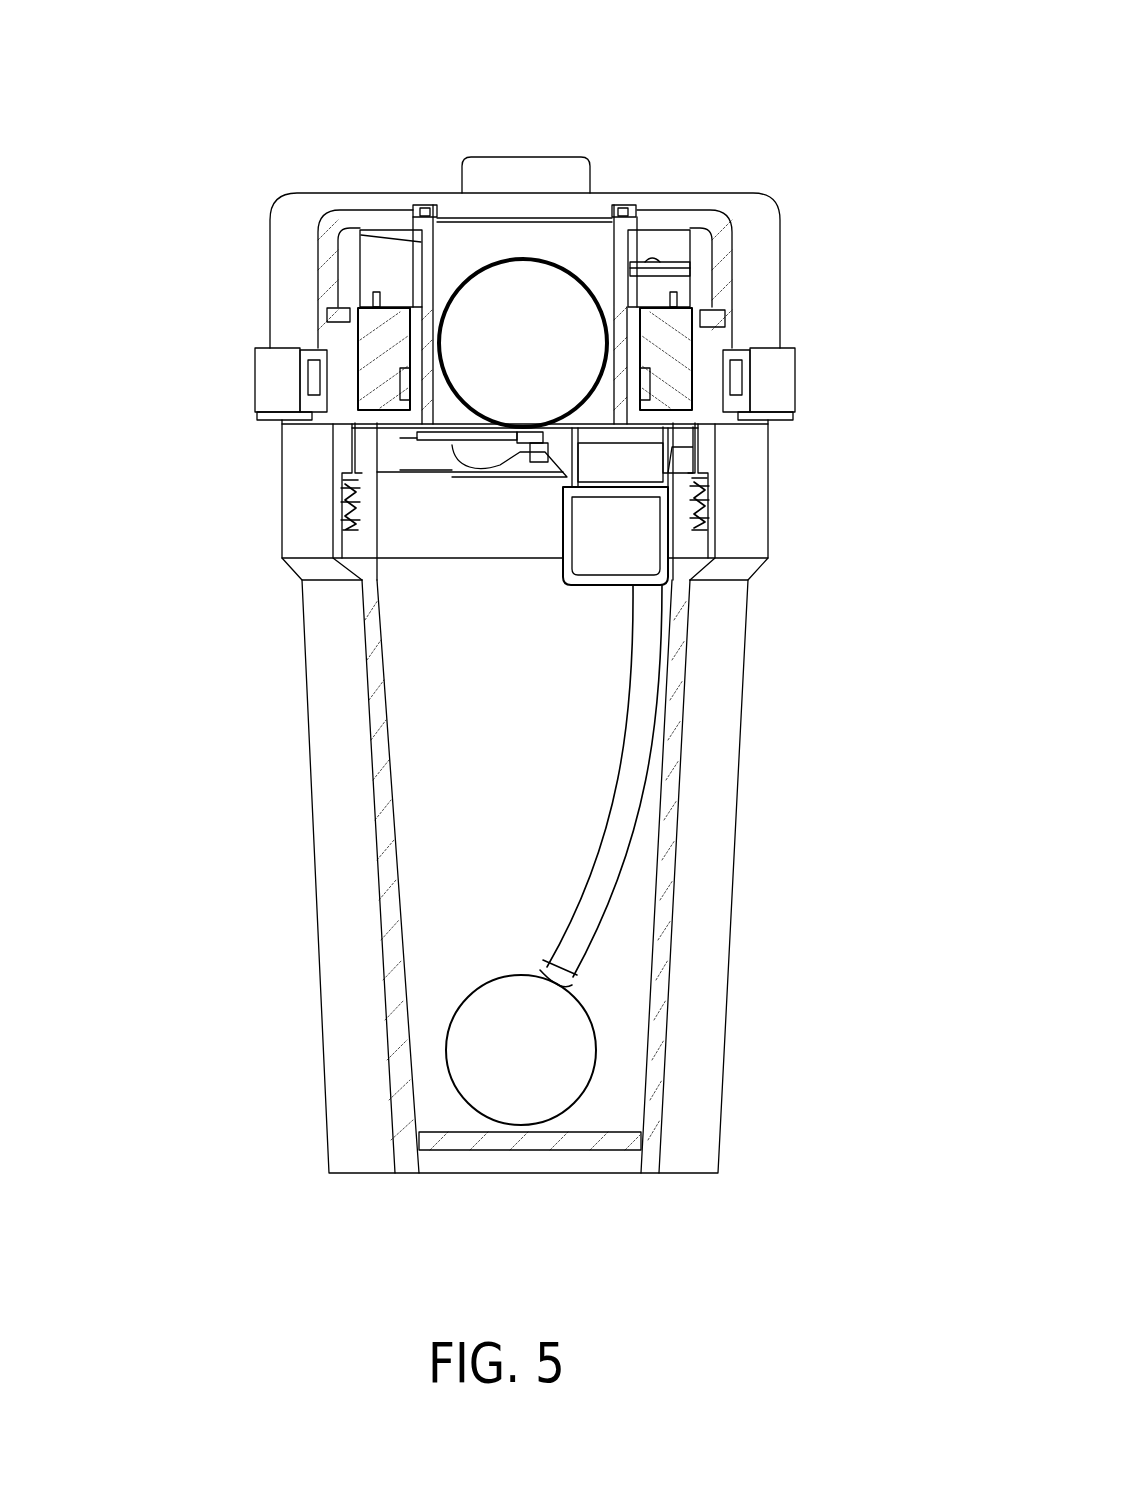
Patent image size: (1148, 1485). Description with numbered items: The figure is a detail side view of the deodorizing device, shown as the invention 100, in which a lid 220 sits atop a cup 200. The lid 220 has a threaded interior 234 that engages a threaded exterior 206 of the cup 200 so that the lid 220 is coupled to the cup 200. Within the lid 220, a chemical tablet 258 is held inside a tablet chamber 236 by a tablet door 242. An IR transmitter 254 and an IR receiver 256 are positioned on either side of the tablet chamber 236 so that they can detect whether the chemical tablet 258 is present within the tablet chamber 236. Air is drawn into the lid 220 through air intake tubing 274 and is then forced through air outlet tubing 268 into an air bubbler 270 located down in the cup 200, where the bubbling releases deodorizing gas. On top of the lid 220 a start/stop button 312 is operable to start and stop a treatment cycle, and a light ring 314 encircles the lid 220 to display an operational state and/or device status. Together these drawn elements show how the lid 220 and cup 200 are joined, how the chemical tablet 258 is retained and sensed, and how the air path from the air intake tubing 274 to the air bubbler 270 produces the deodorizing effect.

The invention 100 is at (818, 108).
The cup 200 is at (733, 913).
The threaded exterior 206 is at (690, 518).
The lid 220 is at (268, 215).
The threaded interior 234 is at (707, 513).
The tablet chamber 236 is at (585, 218).
The tablet door 242 is at (418, 432).
The IR transmitter 254 is at (376, 363).
The IR receiver 256 is at (672, 357).
The chemical tablet 258 is at (500, 268).
The air outlet tubing 268 is at (648, 698).
The air bubbler 270 is at (573, 1052).
The air intake tubing 274 is at (505, 464).
The start/stop button 312 is at (527, 152).
The light ring 314 is at (255, 376).